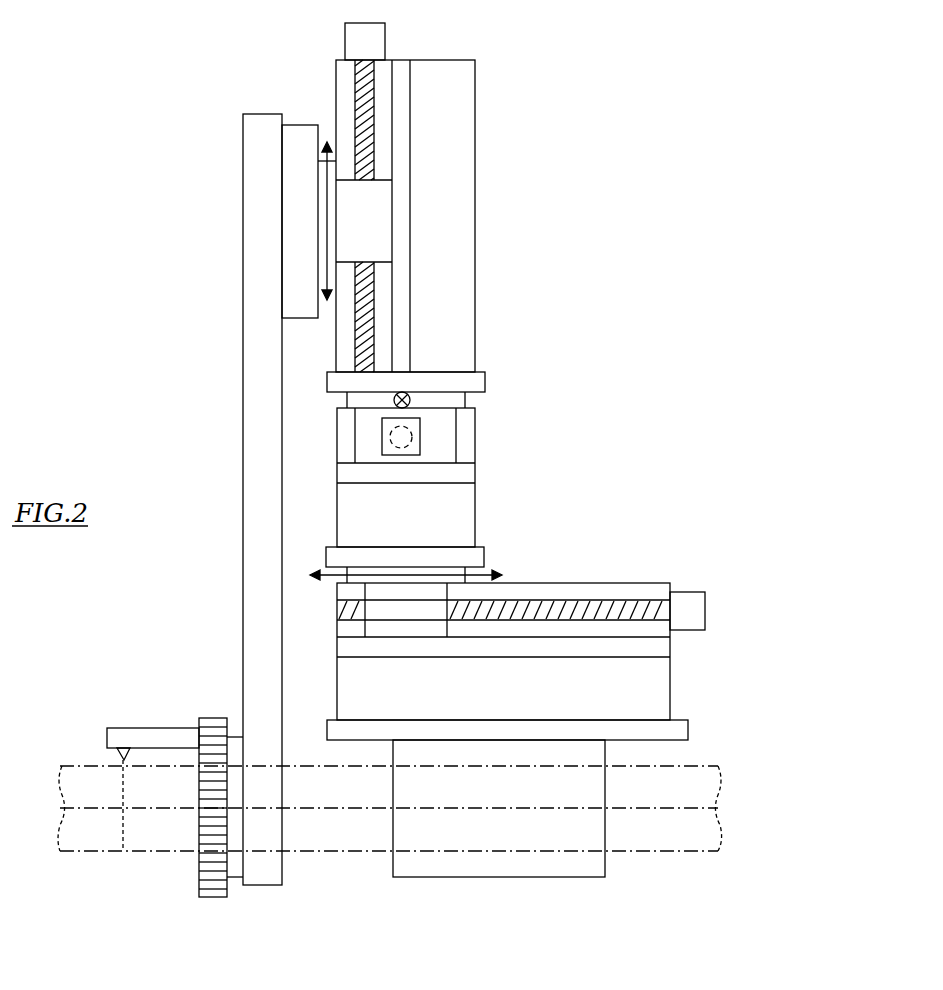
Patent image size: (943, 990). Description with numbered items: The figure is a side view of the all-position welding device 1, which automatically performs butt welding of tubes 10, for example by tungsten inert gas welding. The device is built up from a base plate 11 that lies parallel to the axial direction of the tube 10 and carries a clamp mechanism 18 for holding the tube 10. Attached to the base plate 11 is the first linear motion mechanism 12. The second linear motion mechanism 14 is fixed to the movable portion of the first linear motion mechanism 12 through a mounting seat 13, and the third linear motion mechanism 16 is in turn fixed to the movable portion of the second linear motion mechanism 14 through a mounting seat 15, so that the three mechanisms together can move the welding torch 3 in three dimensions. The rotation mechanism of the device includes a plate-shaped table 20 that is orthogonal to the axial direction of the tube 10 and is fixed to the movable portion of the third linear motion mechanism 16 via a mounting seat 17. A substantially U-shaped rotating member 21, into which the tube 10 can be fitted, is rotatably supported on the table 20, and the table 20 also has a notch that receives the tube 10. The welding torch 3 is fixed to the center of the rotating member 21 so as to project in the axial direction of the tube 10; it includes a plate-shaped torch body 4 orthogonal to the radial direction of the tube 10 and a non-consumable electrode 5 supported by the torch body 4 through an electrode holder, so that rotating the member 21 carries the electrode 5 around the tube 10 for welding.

The all-position welding device 1 is at (100, 252).
The welding torch 3 is at (165, 727).
The torch body 4 is at (140, 737).
The non-consumable electrode 5 is at (125, 752).
The tube 10 is at (85, 848).
The base plate 11 is at (688, 728).
The first linear motion mechanism 12 is at (632, 578).
The mounting seat 13 is at (484, 556).
The second linear motion mechanism 14 is at (480, 443).
The mounting seat 15 is at (443, 377).
The third linear motion mechanism 16 is at (480, 138).
The mounting seat 17 is at (300, 225).
The clamp mechanism 18 is at (502, 843).
The table 20 is at (260, 364).
The rotating member 21 is at (210, 897).